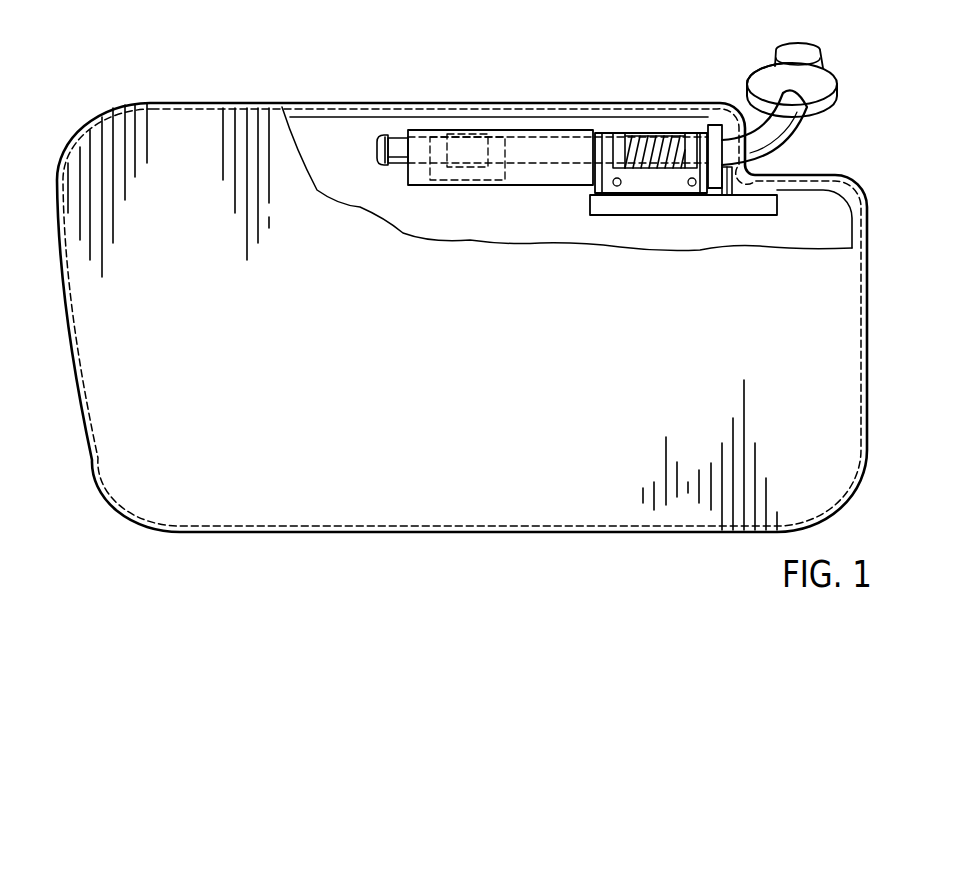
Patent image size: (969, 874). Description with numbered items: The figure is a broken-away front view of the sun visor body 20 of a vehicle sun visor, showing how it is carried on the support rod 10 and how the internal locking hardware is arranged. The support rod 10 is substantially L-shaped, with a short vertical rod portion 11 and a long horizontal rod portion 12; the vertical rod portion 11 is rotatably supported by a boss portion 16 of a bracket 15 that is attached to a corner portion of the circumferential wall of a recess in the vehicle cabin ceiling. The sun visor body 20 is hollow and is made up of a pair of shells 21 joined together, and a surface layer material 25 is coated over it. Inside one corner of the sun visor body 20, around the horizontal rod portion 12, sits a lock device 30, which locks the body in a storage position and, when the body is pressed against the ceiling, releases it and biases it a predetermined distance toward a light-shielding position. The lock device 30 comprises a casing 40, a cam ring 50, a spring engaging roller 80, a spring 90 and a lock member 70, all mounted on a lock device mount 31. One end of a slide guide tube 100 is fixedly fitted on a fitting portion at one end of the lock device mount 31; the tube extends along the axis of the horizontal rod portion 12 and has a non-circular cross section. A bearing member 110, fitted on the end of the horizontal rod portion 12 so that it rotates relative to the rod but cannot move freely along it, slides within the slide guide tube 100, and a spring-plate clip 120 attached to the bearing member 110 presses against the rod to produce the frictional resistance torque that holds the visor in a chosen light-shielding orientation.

The support rod 10 is at (798, 136).
The vertical rod portion 11 is at (795, 110).
The horizontal rod portion 12 is at (522, 150).
The bracket 15 is at (762, 70).
The boss portion 16 is at (813, 68).
The sun visor body 20 is at (320, 115).
The shells 21 is at (377, 103).
The surface layer material 25 is at (552, 105).
The lock device 30 is at (657, 127).
The lock device mount 31 is at (713, 215).
The casing 40 is at (630, 183).
The cam ring 50 is at (713, 122).
The lock member 70 is at (726, 172).
The spring engaging roller 80 is at (618, 127).
The spring 90 is at (652, 172).
The slide guide tube 100 is at (532, 177).
The bearing member 110 is at (436, 143).
The clip 120 is at (471, 145).